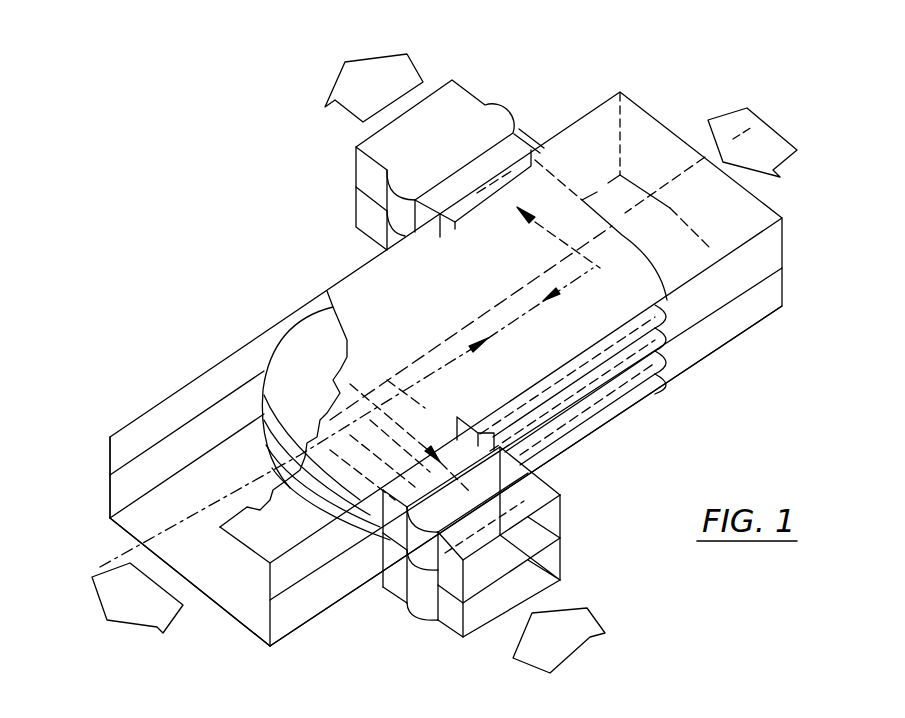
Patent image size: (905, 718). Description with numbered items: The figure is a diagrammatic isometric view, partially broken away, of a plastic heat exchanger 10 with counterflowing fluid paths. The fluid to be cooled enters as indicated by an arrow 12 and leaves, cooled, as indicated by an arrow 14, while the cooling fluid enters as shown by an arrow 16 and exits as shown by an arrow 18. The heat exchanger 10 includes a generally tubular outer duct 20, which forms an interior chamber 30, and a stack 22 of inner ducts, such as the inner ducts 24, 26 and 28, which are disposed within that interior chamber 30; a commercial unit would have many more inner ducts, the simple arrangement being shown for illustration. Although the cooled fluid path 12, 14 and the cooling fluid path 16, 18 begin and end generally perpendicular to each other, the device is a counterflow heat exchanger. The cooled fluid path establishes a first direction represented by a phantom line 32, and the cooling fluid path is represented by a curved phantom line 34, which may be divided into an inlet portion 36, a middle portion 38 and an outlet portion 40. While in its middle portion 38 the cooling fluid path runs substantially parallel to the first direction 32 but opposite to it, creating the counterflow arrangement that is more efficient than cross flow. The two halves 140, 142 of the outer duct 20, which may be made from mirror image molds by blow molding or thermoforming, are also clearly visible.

The heat exchanger 10 is at (574, 67).
The arrow 12 is at (790, 146).
The arrow 14 is at (103, 598).
The arrow 16 is at (590, 637).
The arrow 18 is at (347, 82).
The outer duct 20 is at (797, 209).
The stack 22 is at (297, 323).
The inner duct 24 is at (265, 402).
The inner duct 26 is at (264, 437).
The inner duct 28 is at (272, 470).
The interior chamber 30 is at (232, 604).
The phantom line 32 is at (672, 188).
The curved phantom line 34 is at (559, 292).
The inlet portion 36 is at (412, 446).
The middle portion 38 is at (457, 356).
The outlet portion 40 is at (562, 247).
The half of the outer duct 140 is at (782, 250).
The half of the outer duct 142 is at (782, 290).